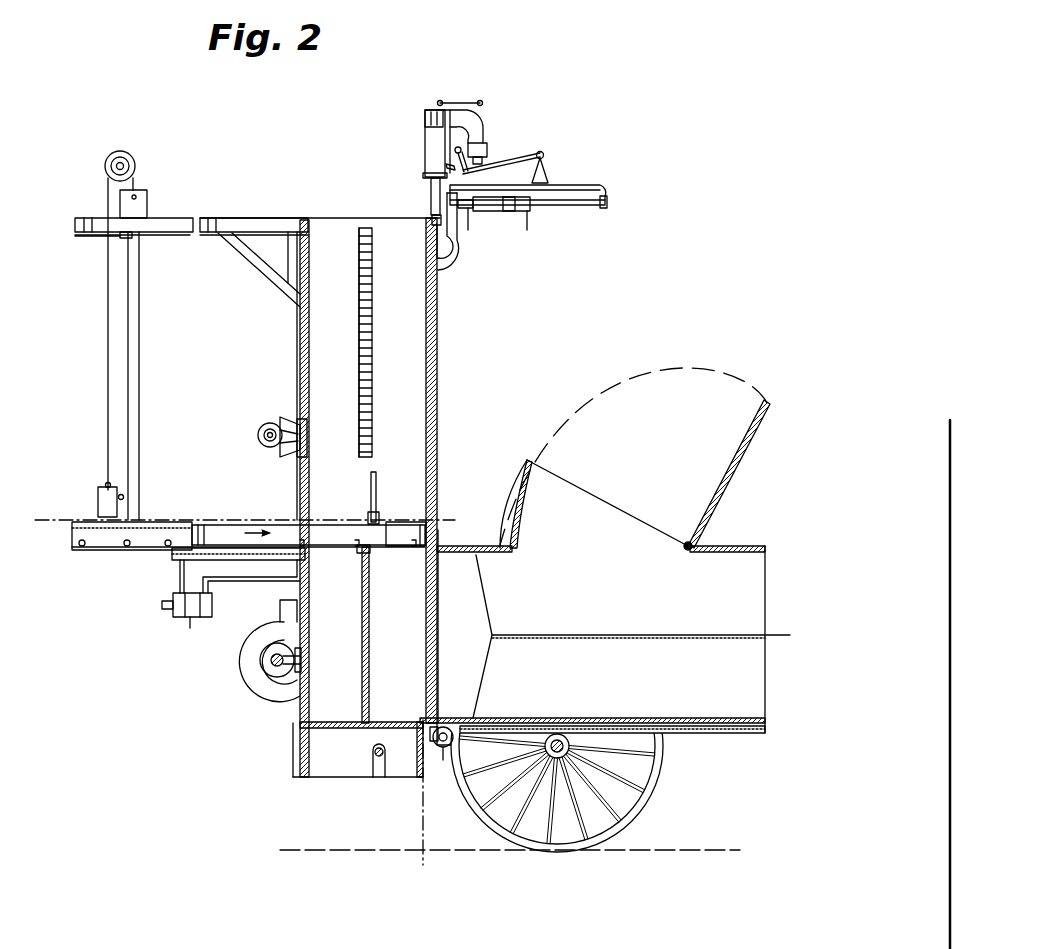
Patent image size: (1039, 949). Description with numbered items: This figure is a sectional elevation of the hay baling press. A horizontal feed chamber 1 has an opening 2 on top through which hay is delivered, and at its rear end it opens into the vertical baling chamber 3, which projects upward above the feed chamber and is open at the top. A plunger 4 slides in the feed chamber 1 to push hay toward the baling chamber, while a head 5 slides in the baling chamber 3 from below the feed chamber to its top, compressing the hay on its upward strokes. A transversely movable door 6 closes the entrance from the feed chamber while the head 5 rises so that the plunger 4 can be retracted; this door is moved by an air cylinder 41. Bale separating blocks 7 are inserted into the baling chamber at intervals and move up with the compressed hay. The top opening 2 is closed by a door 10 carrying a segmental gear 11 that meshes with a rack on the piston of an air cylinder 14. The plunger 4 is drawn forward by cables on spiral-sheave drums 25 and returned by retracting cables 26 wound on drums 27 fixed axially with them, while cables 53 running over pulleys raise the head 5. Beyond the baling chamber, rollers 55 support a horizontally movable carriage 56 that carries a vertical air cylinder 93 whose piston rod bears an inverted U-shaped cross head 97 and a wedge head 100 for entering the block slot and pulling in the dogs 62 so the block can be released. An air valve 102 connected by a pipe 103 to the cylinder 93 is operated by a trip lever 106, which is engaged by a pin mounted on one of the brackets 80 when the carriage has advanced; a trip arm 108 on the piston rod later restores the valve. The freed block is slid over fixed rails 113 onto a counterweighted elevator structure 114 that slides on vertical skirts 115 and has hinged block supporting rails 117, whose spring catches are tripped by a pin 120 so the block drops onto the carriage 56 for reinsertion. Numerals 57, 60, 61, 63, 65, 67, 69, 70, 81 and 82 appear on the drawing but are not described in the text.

The horizontal feed chamber 1 is at (733, 570).
The opening 2 is at (595, 548).
The vertical baling chamber 3 is at (437, 413).
The plunger 4 is at (436, 657).
The head 5 is at (328, 720).
The transversely movable door 6 is at (424, 610).
The bale separating blocks 7 is at (167, 223).
The door 10 is at (724, 480).
The segmental gear 11 is at (420, 497).
The air cylinder 14 is at (253, 516).
The drums 25 is at (287, 620).
The retracting cables 26 is at (612, 635).
The drums 27 is at (257, 703).
The air cylinder 41 is at (474, 716).
The cables 53 is at (365, 680).
The rollers 55 is at (127, 548).
The carriage 56 is at (218, 525).
The motor 57 is at (214, 602).
The block 60 is at (379, 528).
The rod 61 is at (370, 500).
The dogs 62 is at (362, 545).
The rack 63 is at (368, 325).
The rack teeth 65 is at (373, 370).
The bracket 67 is at (282, 422).
The roller 69 is at (263, 425).
The pin 70 is at (266, 438).
The brackets 80 is at (455, 243).
The bar 81 is at (586, 193).
The slide 82 is at (497, 210).
The air cylinder 93 is at (432, 150).
The cross head 97 is at (433, 197).
The wedge head 100 is at (437, 217).
The air valve 102 is at (483, 148).
The pipe 103 is at (455, 101).
The trip lever 106 is at (544, 160).
The trip arm 108 is at (447, 137).
The fixed rails 113 is at (228, 230).
The counterweighted elevator structure 114 is at (137, 200).
The vertical skirts 115 is at (133, 380).
The block supporting rails 117 is at (103, 236).
The pin 120 is at (123, 495).